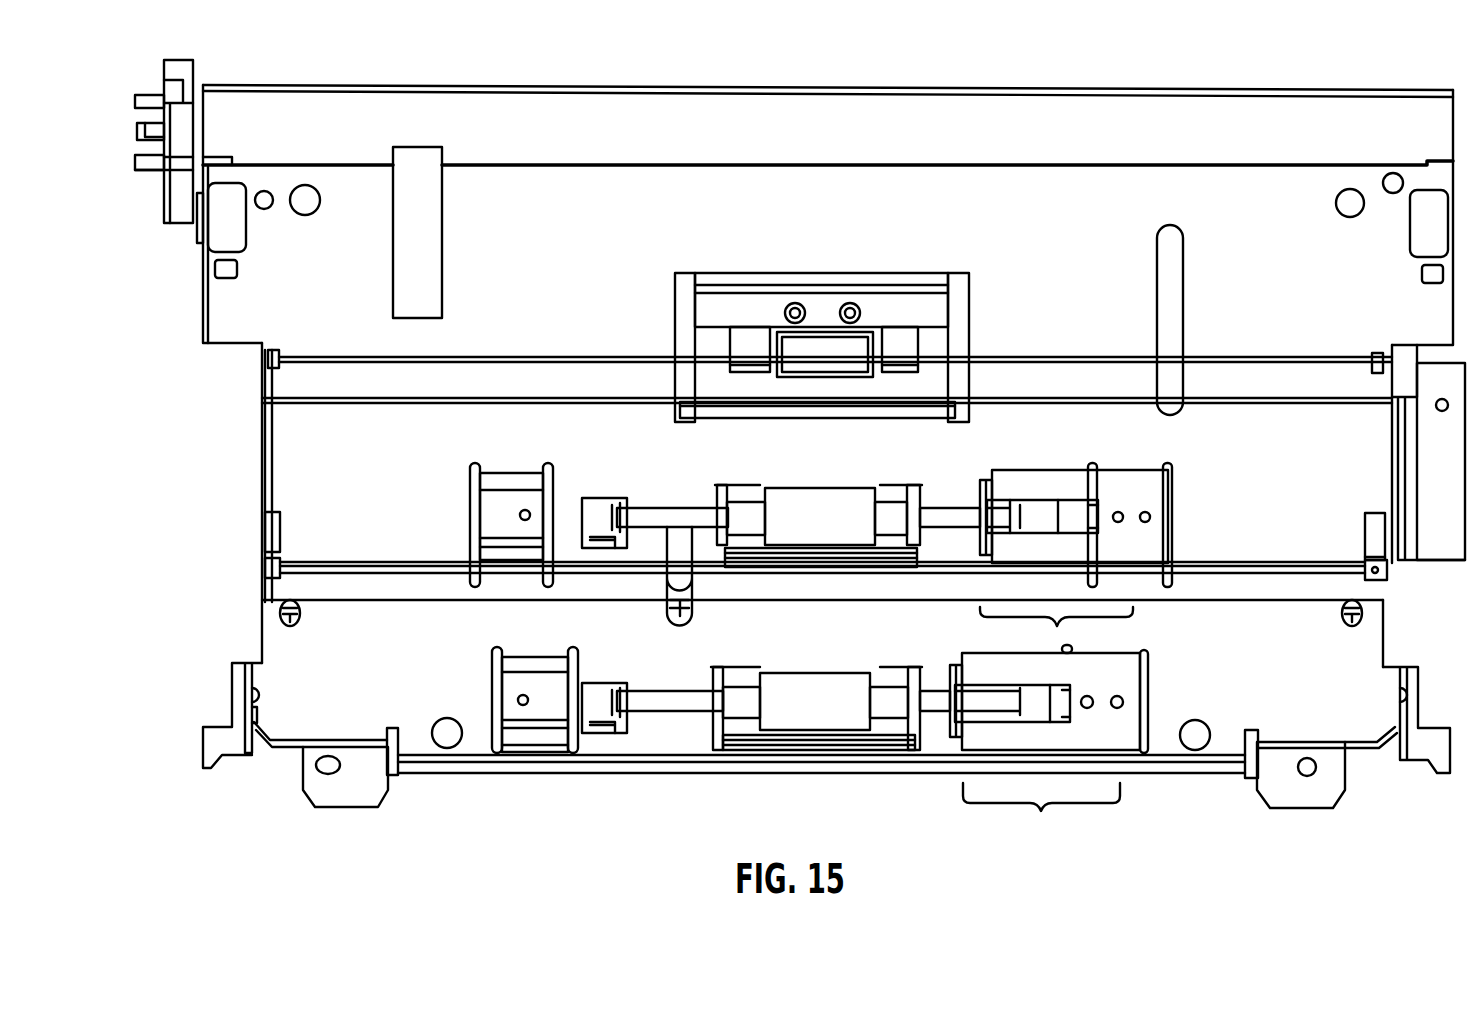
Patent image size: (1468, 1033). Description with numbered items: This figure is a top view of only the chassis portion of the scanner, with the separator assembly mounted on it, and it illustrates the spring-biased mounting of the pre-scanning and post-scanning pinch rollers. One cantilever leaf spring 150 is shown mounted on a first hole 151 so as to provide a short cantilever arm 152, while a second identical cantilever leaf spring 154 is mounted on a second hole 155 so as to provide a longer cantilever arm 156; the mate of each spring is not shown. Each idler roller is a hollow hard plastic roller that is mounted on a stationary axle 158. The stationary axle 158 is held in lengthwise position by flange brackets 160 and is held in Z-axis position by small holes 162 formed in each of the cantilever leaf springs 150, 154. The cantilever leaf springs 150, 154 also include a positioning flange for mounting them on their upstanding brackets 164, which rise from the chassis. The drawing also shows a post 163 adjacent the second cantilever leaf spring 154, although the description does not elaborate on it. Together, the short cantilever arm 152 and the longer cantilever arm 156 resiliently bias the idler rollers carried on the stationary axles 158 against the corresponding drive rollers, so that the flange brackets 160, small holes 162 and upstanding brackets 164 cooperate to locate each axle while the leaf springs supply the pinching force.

The cantilever leaf spring 150 is at (1055, 478).
The first hole 151 is at (1122, 510).
The short cantilever arm 152 is at (1055, 628).
The second cantilever leaf spring 154 is at (1115, 735).
The second hole 155 is at (1122, 697).
The longer cantilever arm 156 is at (1041, 814).
The stationary axle 158 is at (677, 510).
The flange brackets 160 is at (598, 510).
The small holes 162 is at (978, 497).
The pivot post 163 is at (1147, 722).
The upstanding brackets 164 is at (463, 520).